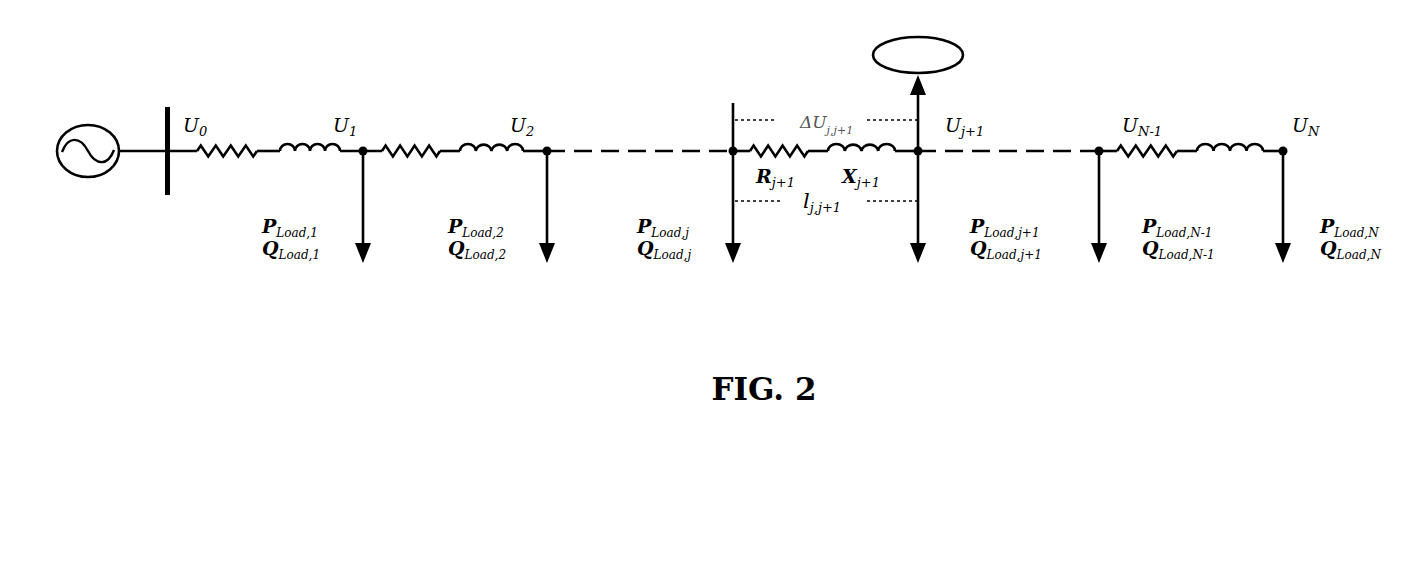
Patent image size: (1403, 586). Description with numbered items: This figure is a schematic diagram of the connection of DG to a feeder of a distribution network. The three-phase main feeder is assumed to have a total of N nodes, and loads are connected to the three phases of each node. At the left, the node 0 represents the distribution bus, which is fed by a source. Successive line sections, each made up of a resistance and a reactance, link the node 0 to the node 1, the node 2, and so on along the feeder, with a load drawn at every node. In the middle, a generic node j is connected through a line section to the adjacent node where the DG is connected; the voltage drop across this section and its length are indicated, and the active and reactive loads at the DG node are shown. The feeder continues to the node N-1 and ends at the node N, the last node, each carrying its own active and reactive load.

The node 0 is at (155, 151).
The node 1 is at (355, 205).
The node 2 is at (537, 205).
The node j is at (723, 183).
The node N-1 is at (1125, 205).
The node N is at (1296, 205).